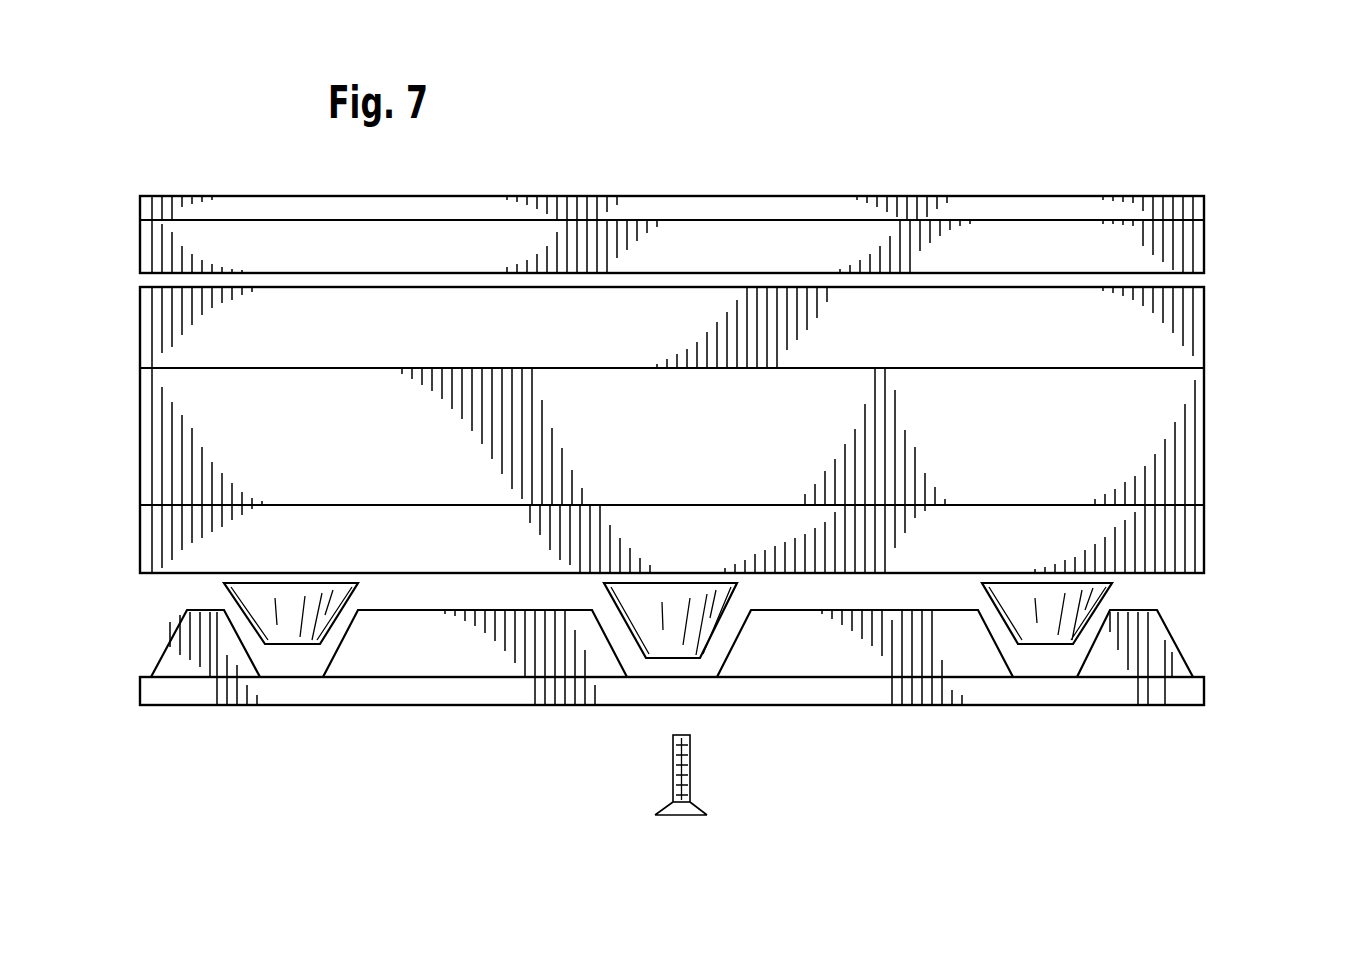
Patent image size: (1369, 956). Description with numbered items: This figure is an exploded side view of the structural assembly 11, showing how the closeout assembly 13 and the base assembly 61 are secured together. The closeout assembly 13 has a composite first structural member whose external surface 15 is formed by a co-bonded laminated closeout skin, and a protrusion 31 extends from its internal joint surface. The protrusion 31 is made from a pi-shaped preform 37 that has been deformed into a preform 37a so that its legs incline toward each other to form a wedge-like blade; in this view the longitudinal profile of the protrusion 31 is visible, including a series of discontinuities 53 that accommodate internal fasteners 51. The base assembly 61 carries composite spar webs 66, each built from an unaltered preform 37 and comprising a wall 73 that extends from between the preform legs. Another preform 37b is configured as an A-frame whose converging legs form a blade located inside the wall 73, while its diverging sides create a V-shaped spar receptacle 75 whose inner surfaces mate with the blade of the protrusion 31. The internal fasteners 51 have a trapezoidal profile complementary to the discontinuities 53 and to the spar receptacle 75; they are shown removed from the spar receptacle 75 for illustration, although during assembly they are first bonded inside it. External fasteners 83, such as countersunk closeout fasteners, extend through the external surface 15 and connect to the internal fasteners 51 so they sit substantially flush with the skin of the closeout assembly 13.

The structural assembly 11 is at (836, 141).
The closeout assembly 13 is at (98, 588).
The external surface 15 is at (840, 718).
The protrusion 31 is at (1172, 653).
The pi-shaped preform 37 is at (1167, 248).
The preform 37a is at (384, 660).
The preform 37b is at (1194, 518).
The internal fastener 51 is at (642, 626).
The discontinuity 53 is at (728, 653).
The base assembly 61 is at (98, 193).
The spar web 66 is at (1236, 345).
The wall 73 is at (1194, 454).
The spar receptacle 75 is at (1203, 540).
The external fastener 83 is at (673, 772).